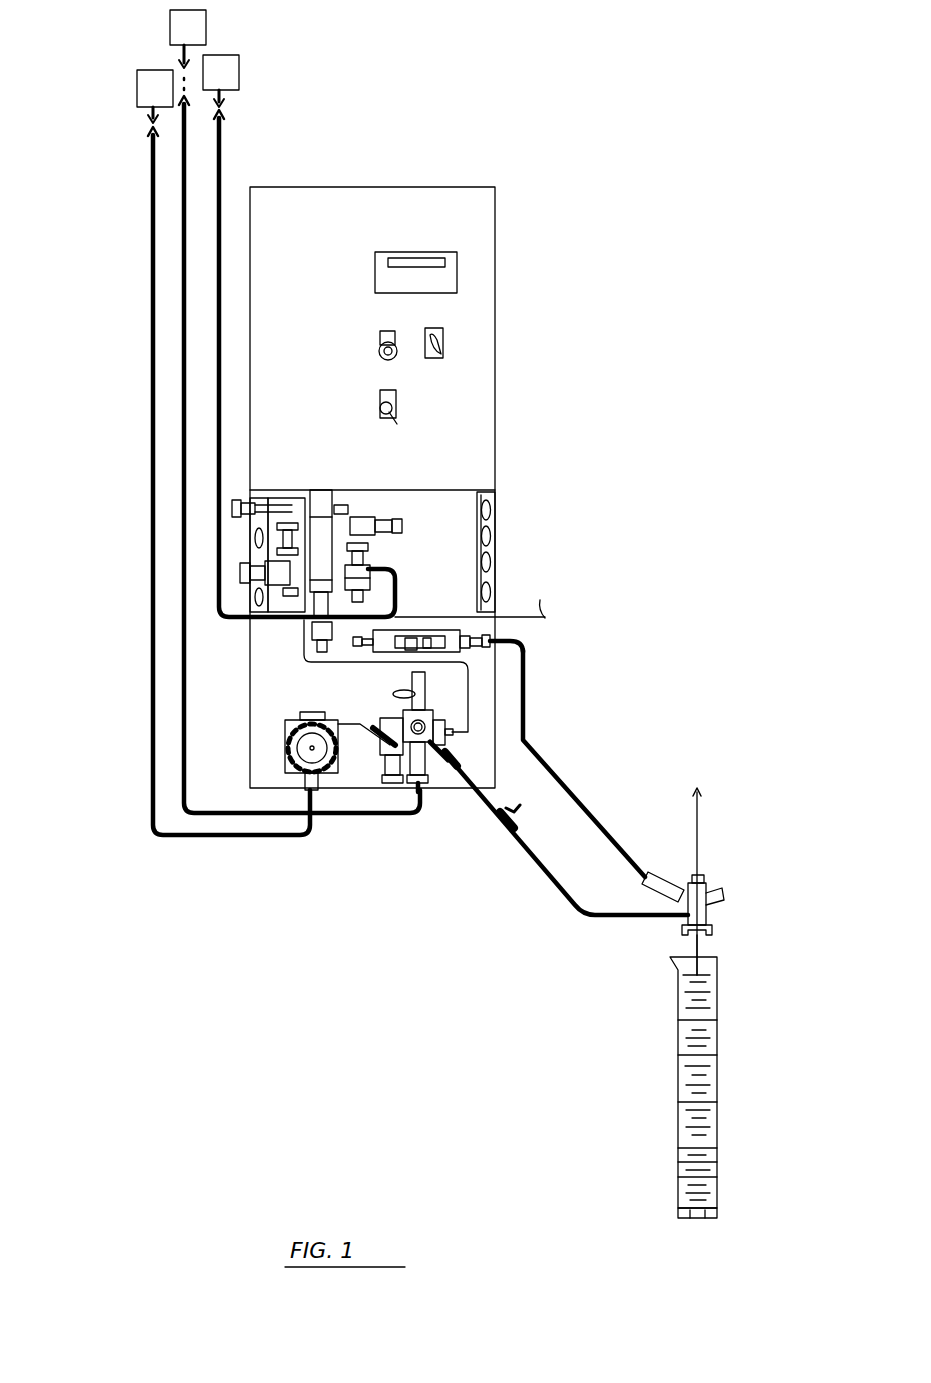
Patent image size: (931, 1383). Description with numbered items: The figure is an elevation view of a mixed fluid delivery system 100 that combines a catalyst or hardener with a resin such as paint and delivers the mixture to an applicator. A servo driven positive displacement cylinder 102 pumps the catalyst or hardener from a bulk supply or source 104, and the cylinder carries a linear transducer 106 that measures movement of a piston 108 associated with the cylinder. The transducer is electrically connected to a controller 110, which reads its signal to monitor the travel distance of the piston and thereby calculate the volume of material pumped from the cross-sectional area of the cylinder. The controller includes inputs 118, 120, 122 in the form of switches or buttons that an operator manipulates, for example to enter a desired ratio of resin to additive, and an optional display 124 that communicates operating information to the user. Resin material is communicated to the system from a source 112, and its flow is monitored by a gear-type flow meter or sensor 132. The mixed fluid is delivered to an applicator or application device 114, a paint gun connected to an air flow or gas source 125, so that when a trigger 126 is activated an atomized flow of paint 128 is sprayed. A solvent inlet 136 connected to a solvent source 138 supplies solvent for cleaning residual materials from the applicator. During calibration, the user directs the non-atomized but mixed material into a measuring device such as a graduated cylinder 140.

The mixed fluid delivery system 100 is at (680, 157).
The servo driven positive displacement cylinder 102 is at (320, 494).
The bulk supply or source 104 is at (239, 70).
The linear transducer 106 is at (286, 522).
The piston 108 is at (328, 530).
The controller 110 is at (448, 274).
The source 112 is at (137, 92).
The applicator or application device 114 is at (748, 878).
The input 118 is at (378, 352).
The input 120 is at (446, 335).
The input 122 is at (378, 406).
The display 124 is at (430, 258).
The air flow or gas source 125 is at (540, 604).
The trigger 126 is at (684, 906).
The flow of paint 128 is at (700, 952).
The flow meter or sensor 132 is at (300, 740).
The solvent inlet 136 is at (352, 816).
The solvent source 138 is at (170, 31).
The graduated cylinder 140 is at (718, 1068).